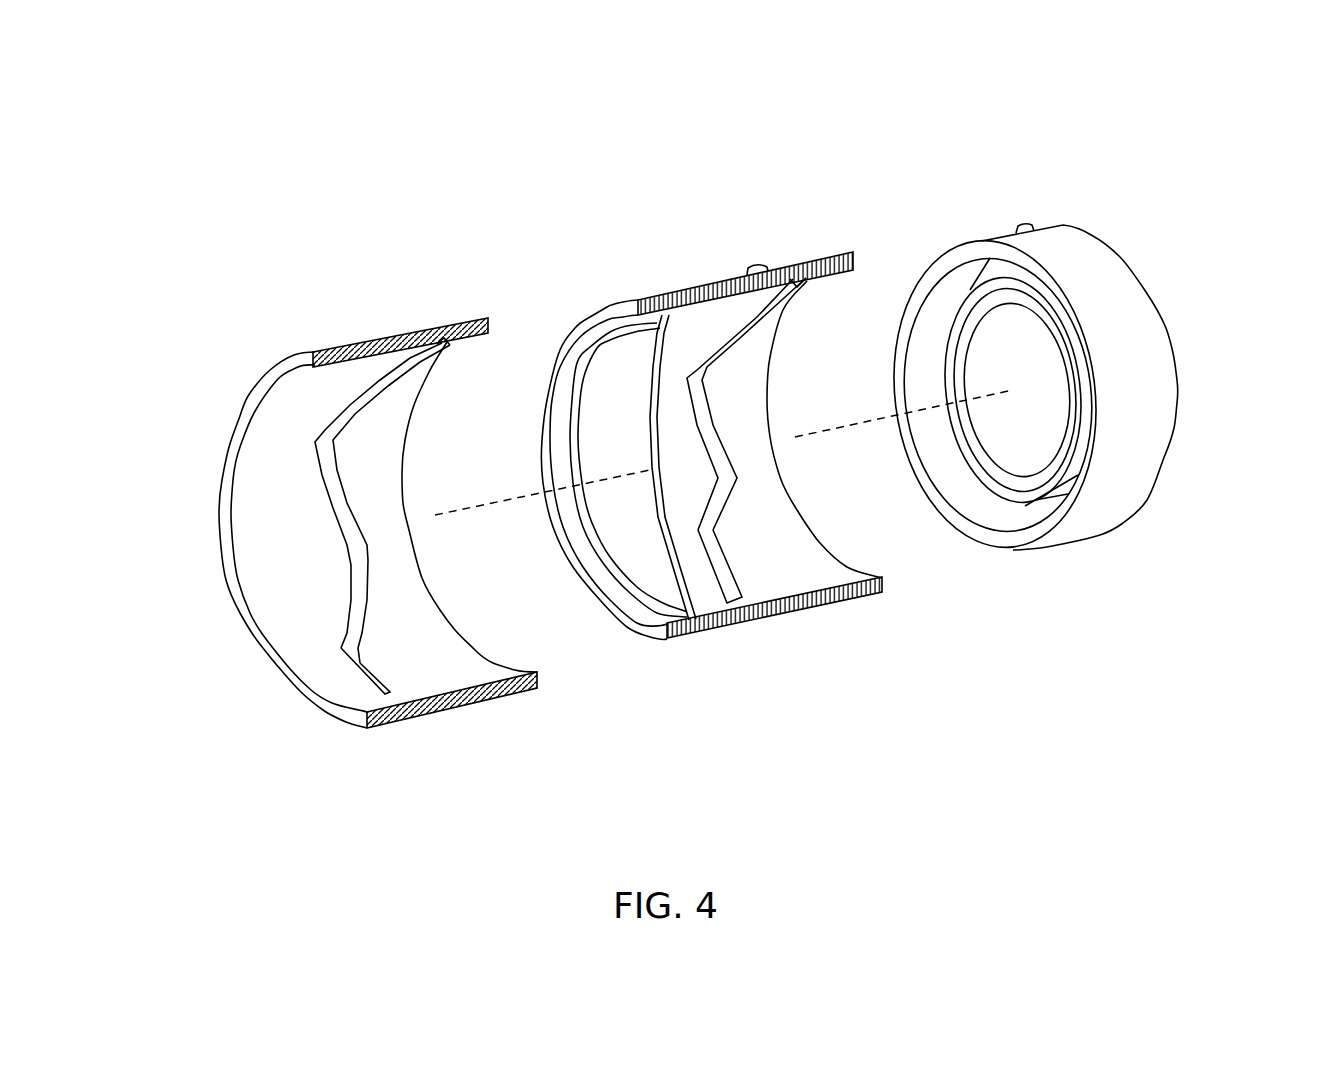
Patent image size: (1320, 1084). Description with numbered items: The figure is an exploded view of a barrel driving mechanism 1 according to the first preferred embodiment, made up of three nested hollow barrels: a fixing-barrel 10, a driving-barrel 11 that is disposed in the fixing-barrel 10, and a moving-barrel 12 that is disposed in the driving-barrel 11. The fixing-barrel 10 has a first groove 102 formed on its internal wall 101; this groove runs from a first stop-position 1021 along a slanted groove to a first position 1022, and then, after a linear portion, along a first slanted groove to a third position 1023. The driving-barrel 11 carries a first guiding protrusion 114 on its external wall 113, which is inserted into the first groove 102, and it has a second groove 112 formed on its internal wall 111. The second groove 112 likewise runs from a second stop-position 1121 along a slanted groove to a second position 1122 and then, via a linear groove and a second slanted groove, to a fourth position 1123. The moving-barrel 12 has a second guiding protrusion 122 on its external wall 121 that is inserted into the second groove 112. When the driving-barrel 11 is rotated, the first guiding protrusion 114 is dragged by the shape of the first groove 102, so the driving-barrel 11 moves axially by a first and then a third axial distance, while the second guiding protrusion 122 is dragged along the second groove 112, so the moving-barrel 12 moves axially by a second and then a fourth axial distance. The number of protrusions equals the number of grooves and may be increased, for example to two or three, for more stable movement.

The barrel driving mechanism 1 is at (252, 187).
The fixing-barrel 10 is at (392, 728).
The internal wall 101 is at (403, 670).
The first groove 102 is at (279, 461).
The first stop-position 1021 is at (450, 345).
The first position 1022 is at (338, 500).
The third position 1023 is at (358, 658).
The driving-barrel 11 is at (738, 617).
The internal wall 111 is at (797, 572).
The second groove 112 is at (737, 440).
The second stop-position 1121 is at (797, 280).
The second position 1122 is at (712, 455).
The fourth position 1123 is at (712, 548).
The external wall 113 is at (870, 597).
The first guiding protrusion 114 is at (753, 260).
The moving-barrel 12 is at (1180, 430).
The external wall 121 is at (1113, 483).
The second guiding protrusion 122 is at (1026, 221).